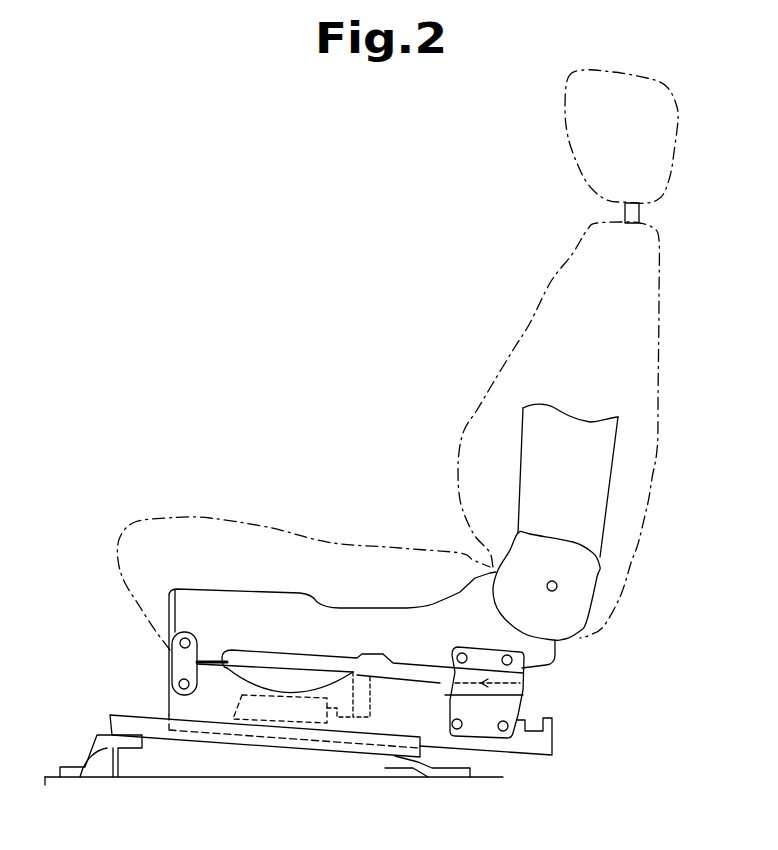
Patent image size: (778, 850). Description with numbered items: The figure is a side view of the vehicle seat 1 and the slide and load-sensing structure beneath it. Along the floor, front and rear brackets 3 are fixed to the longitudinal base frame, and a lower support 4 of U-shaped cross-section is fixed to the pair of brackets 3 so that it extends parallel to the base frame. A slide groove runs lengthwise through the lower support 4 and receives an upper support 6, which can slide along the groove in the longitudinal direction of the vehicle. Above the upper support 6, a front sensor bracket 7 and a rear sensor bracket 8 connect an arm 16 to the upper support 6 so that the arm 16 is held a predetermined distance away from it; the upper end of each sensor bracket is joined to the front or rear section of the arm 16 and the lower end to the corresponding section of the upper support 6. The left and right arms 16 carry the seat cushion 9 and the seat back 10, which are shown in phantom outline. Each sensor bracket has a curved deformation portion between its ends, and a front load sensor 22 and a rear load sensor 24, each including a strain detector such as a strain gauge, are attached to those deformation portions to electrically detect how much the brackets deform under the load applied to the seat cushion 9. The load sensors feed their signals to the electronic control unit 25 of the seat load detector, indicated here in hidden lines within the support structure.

The seat 1 is at (472, 316).
The brackets 3 is at (73, 765).
The lower support 4 is at (118, 715).
The upper support 6 is at (533, 750).
The front sensor bracket 7 is at (197, 630).
The rear sensor bracket 8 is at (488, 648).
The seat cushion 9 is at (183, 517).
The seat back 10 is at (660, 337).
The arm 16 is at (272, 597).
The left front load sensor 22 is at (172, 660).
The left rear load sensor 24 is at (524, 692).
The electronic control unit (ECU) 25 is at (233, 719).